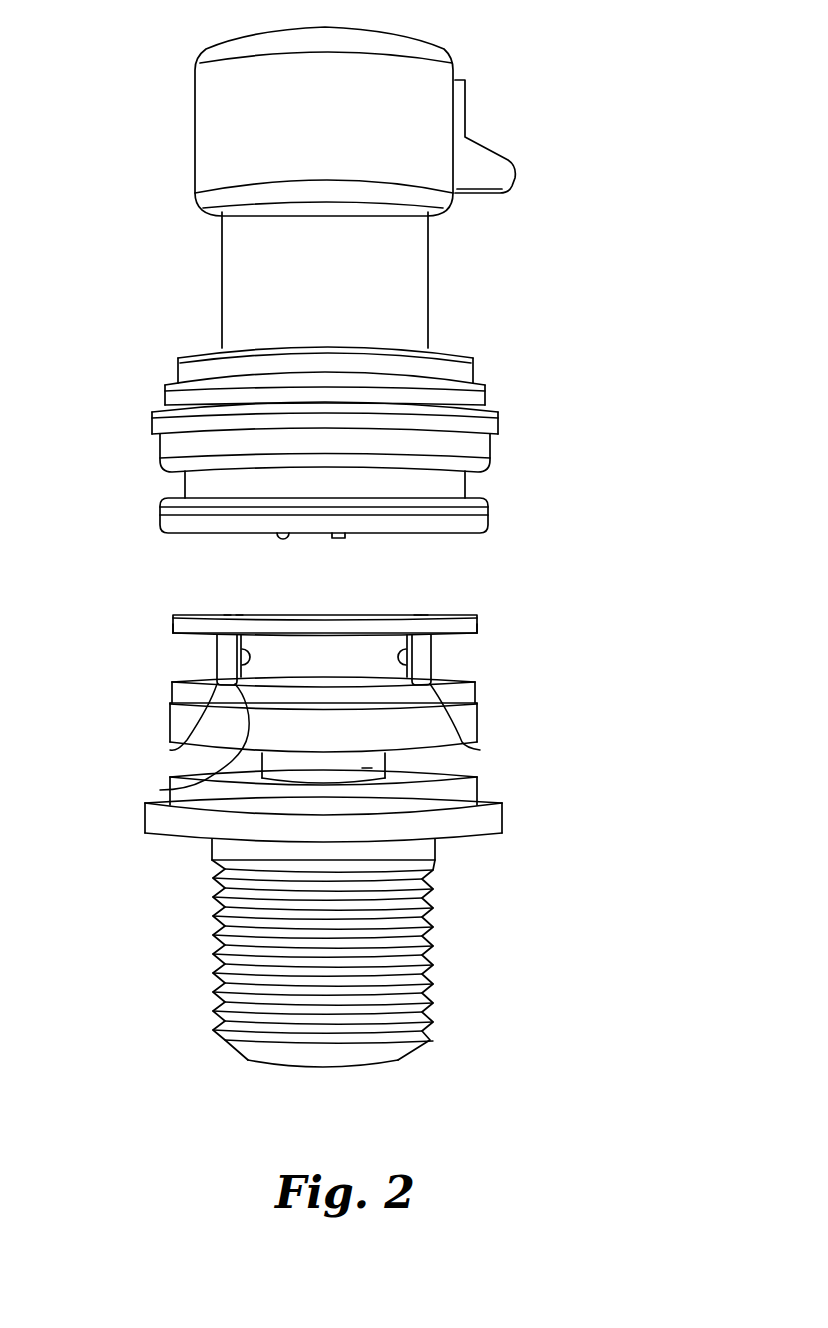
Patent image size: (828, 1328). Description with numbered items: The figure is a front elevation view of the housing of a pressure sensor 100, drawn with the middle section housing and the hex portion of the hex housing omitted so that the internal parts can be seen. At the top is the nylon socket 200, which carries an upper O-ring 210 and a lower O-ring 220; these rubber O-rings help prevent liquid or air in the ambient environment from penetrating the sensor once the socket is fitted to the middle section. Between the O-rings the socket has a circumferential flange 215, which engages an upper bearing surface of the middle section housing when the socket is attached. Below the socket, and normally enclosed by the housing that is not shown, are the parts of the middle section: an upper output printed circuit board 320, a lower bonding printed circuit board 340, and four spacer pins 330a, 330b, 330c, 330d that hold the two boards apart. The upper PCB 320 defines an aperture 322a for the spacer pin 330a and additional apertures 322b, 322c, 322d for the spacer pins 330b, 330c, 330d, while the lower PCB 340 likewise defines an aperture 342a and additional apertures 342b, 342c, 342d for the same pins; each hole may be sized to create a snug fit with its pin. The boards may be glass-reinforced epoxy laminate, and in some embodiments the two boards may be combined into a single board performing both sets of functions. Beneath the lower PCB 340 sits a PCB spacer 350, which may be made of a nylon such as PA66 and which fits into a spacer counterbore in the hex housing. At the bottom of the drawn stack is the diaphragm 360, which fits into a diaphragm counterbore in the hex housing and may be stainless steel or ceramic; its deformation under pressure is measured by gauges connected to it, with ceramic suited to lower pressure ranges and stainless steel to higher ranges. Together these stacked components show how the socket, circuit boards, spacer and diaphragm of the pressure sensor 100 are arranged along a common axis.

The pressure sensor 100 is at (641, 1013).
The nylon socket 200 is at (510, 29).
The upper O-ring 210 is at (487, 387).
The circumferential flange 215 is at (498, 422).
The lower O-ring 220 is at (488, 512).
The upper output printed circuit board 320 is at (173, 619).
The aperture 322a is at (418, 615).
The aperture 322b is at (227, 615).
The aperture 322c is at (238, 615).
The aperture 322d is at (425, 615).
The spacer pin 330a is at (477, 629).
The spacer pin 330b is at (217, 655).
The spacer pin 330c is at (173, 631).
The spacer pin 330d is at (431, 657).
The lower bonding printed circuit board 340 is at (172, 688).
The PCB spacer 350 is at (477, 728).
The aperture 342a is at (367, 768).
The aperture 342b is at (170, 750).
The aperture 342c is at (160, 790).
The aperture 342d is at (480, 750).
The diaphragm 360 is at (412, 684).